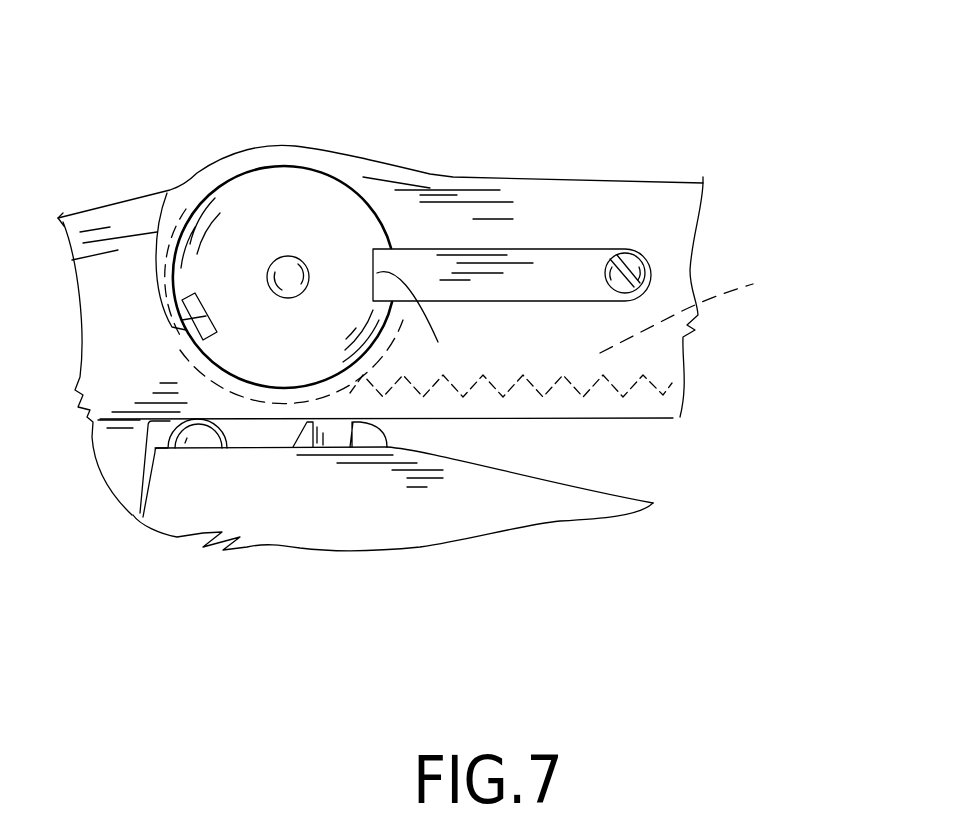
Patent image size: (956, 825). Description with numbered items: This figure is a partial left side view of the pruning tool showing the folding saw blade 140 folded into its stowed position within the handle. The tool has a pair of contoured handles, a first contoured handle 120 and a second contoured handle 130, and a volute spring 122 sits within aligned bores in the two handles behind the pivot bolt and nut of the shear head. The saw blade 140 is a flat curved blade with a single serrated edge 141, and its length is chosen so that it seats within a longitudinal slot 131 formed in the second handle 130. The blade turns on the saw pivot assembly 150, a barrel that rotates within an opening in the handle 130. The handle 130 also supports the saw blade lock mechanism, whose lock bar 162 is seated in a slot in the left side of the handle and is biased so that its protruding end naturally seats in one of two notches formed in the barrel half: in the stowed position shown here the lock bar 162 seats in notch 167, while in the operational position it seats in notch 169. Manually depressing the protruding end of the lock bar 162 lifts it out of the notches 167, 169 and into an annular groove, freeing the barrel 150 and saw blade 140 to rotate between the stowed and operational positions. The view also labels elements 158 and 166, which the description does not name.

The contoured handle 120 is at (418, 535).
The volute spring 122 is at (387, 447).
The second contoured handle 130 is at (637, 183).
The longitudinal slot 131 is at (582, 403).
The saw blade 140 is at (707, 310).
The serrated edge 141 is at (645, 383).
The saw pivot assembly 150 is at (310, 165).
The hub 158 is at (288, 256).
The lock bar 162 is at (437, 248).
The screw 166 is at (533, 253).
The notch 167 is at (497, 362).
The notch 169 is at (175, 335).